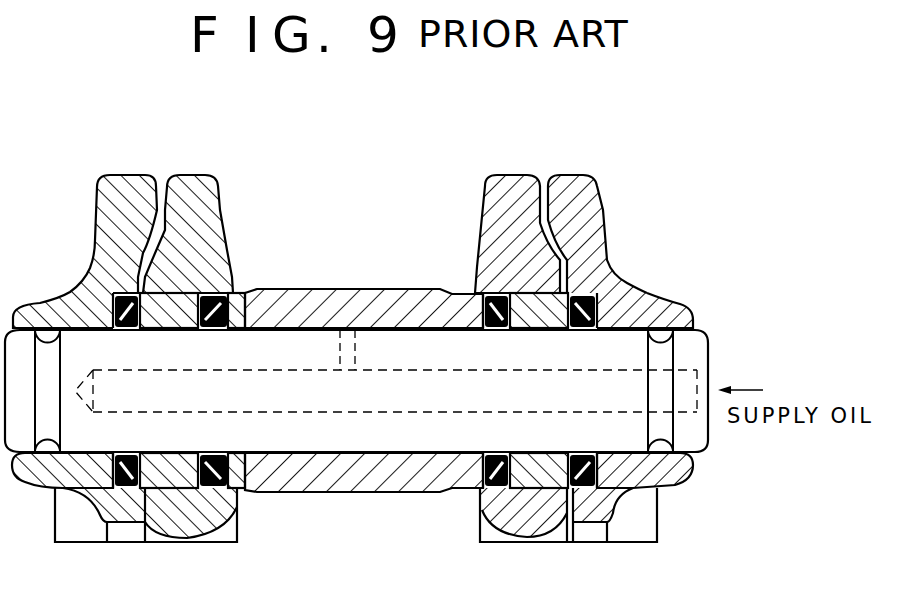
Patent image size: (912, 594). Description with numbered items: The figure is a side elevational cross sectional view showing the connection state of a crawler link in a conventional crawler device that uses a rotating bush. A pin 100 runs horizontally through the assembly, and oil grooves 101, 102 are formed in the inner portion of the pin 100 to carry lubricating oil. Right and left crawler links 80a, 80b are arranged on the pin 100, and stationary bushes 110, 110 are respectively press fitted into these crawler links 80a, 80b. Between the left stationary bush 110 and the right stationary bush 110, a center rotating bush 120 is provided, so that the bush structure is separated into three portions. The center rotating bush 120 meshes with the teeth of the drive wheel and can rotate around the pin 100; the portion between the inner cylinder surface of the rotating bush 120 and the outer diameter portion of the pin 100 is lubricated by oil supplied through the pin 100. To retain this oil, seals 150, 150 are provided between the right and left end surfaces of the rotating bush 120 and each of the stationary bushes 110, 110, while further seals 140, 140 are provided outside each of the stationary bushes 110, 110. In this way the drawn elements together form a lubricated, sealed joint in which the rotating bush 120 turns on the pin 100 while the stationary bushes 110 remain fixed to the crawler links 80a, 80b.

The pin 100 is at (693, 347).
The oil groove 101 is at (357, 352).
The oil groove 102 is at (447, 413).
The rotating bush 120 is at (365, 300).
The seal 140 is at (95, 290).
The crawler link 80a is at (499, 185).
The crawler link 80b is at (135, 178).
The stationary bush 110 is at (170, 293).
The seal 150 is at (220, 300).